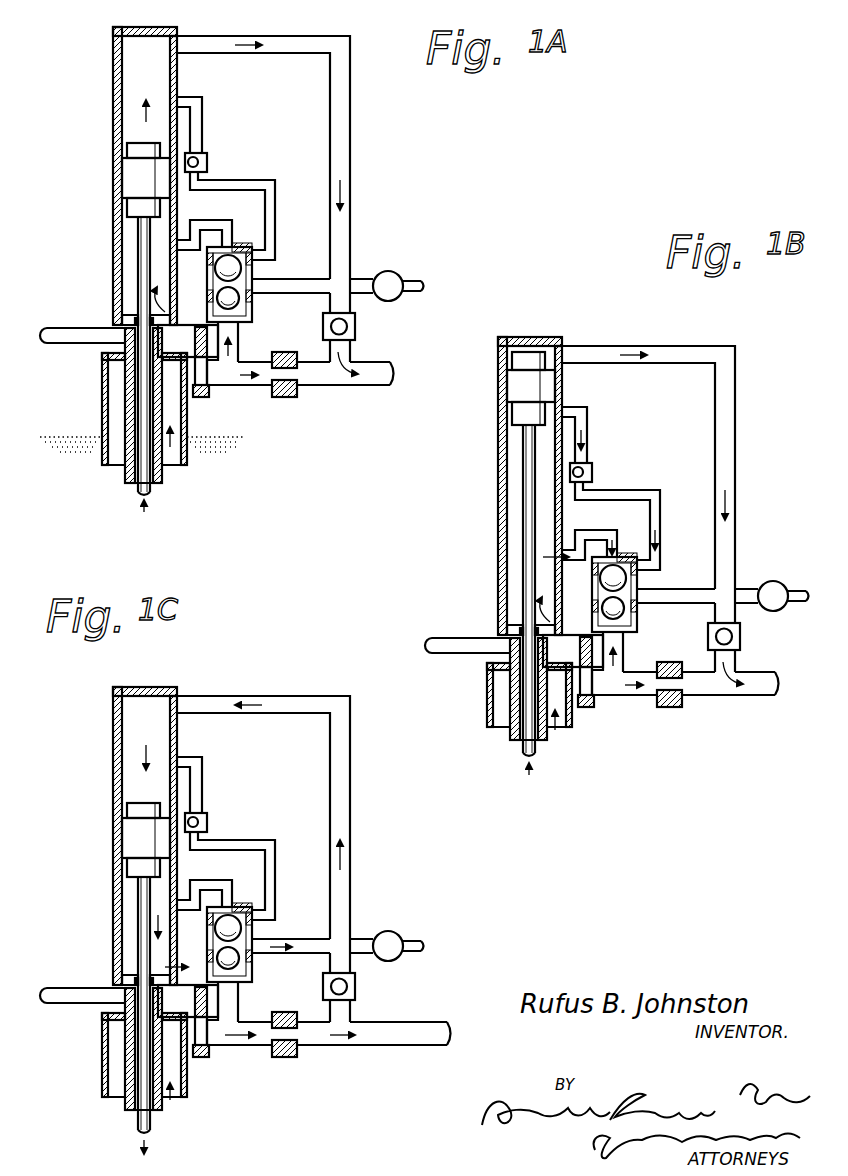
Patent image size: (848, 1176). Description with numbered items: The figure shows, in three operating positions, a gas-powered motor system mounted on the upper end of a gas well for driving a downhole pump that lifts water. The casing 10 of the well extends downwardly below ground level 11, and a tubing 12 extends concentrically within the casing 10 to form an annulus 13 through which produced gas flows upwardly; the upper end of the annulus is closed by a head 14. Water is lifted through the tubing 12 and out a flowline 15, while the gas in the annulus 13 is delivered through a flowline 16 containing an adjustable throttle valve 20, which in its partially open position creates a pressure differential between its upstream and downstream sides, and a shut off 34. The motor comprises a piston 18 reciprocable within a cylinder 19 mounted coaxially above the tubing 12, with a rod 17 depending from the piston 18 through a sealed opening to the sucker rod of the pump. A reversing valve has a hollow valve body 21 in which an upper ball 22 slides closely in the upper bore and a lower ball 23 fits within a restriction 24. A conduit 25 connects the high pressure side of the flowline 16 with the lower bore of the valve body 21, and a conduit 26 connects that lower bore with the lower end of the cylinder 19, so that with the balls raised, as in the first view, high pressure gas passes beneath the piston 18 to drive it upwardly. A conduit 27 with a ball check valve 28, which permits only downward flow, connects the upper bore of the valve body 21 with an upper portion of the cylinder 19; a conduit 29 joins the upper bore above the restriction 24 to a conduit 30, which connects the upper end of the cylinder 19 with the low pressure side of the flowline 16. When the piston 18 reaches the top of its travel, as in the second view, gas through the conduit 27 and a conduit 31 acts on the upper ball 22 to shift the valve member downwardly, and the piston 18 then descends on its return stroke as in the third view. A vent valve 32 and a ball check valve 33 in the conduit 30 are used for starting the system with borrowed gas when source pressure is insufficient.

In FIG. 1A, the casing 10 is at (197, 450).
In FIG. 1A, the ground level 11 is at (237, 437).
In FIG. 1A, the tubing 12 is at (128, 388).
In FIG. 1B, the tubing 12 is at (513, 683).
In FIG. 1C, the tubing 12 is at (128, 1046).
In FIG. 1A, the annulus 13 is at (115, 413).
In FIG. 1B, the annulus 13 is at (500, 702).
In FIG. 1C, the annulus 13 is at (115, 1070).
In FIG. 1A, the head 14 is at (105, 355).
In FIG. 1B, the head 14 is at (490, 663).
In FIG. 1C, the head 14 is at (105, 1016).
In FIG. 1A, the flowline 15 is at (60, 328).
In FIG. 1B, the flowline 15 is at (470, 640).
In FIG. 1C, the flowline 15 is at (60, 988).
In FIG. 1A, the flowline 16 is at (332, 388).
In FIG. 1B, the flowline 16 is at (770, 697).
In FIG. 1C, the flowline 16 is at (375, 1050).
In FIG. 1A, the rod 17 is at (140, 230).
In FIG. 1B, the rod 17 is at (526, 475).
In FIG. 1C, the rod 17 is at (140, 888).
In FIG. 1A, the piston 18 is at (126, 172).
In FIG. 1B, the piston 18 is at (512, 385).
In FIG. 1C, the piston 18 is at (126, 832).
In FIG. 1A, the cylinder 19 is at (113, 78).
In FIG. 1B, the cylinder 19 is at (498, 433).
In FIG. 1C, the cylinder 19 is at (113, 718).
In FIG. 1A, the throttle valve 20 is at (290, 398).
In FIG. 1B, the throttle valve 20 is at (672, 708).
In FIG. 1C, the throttle valve 20 is at (290, 1058).
In FIG. 1A, the valve body 21 is at (253, 312).
In FIG. 1B, the valve body 21 is at (638, 622).
In FIG. 1C, the valve body 21 is at (253, 972).
In FIG. 1A, the upper ball 22 is at (241, 246).
In FIG. 1B, the upper ball 22 is at (626, 556).
In FIG. 1C, the upper ball 22 is at (241, 906).
In FIG. 1A, the lower ball 23 is at (213, 292).
In FIG. 1B, the lower ball 23 is at (598, 602).
In FIG. 1C, the lower ball 23 is at (213, 952).
In FIG. 1A, the restriction 24 is at (246, 298).
In FIG. 1B, the restriction 24 is at (633, 605).
In FIG. 1C, the restriction 24 is at (246, 958).
In FIG. 1A, the conduit 25 is at (239, 335).
In FIG. 1B, the conduit 25 is at (625, 645).
In FIG. 1C, the conduit 25 is at (239, 995).
In FIG. 1A, the conduit 26 is at (190, 318).
In FIG. 1B, the conduit 26 is at (578, 628).
In FIG. 1C, the conduit 26 is at (190, 978).
In FIG. 1A, the conduit 27 is at (237, 182).
In FIG. 1B, the conduit 27 is at (620, 492).
In FIG. 1C, the conduit 27 is at (237, 842).
In FIG. 1A, the ball check valve 28 is at (208, 160).
In FIG. 1B, the ball check valve 28 is at (593, 470).
In FIG. 1C, the ball check valve 28 is at (208, 820).
In FIG. 1A, the conduit 29 is at (305, 279).
In FIG. 1B, the conduit 29 is at (690, 588).
In FIG. 1C, the conduit 29 is at (305, 939).
In FIG. 1A, the conduit 30 is at (351, 128).
In FIG. 1B, the conduit 30 is at (739, 395).
In FIG. 1C, the conduit 30 is at (356, 782).
In FIG. 1A, the conduit 31 is at (214, 220).
In FIG. 1B, the conduit 31 is at (600, 530).
In FIG. 1C, the conduit 31 is at (214, 880).
In FIG. 1A, the vent valve 32 is at (392, 272).
In FIG. 1B, the vent valve 32 is at (777, 583).
In FIG. 1C, the vent valve 32 is at (392, 932).
In FIG. 1A, the ball check valve 33 is at (356, 328).
In FIG. 1B, the ball check valve 33 is at (746, 637).
In FIG. 1C, the ball check valve 33 is at (362, 985).
In FIG. 1A, the shut off 34 is at (212, 390).
In FIG. 1B, the shut off 34 is at (597, 708).
In FIG. 1C, the shut off 34 is at (201, 1022).